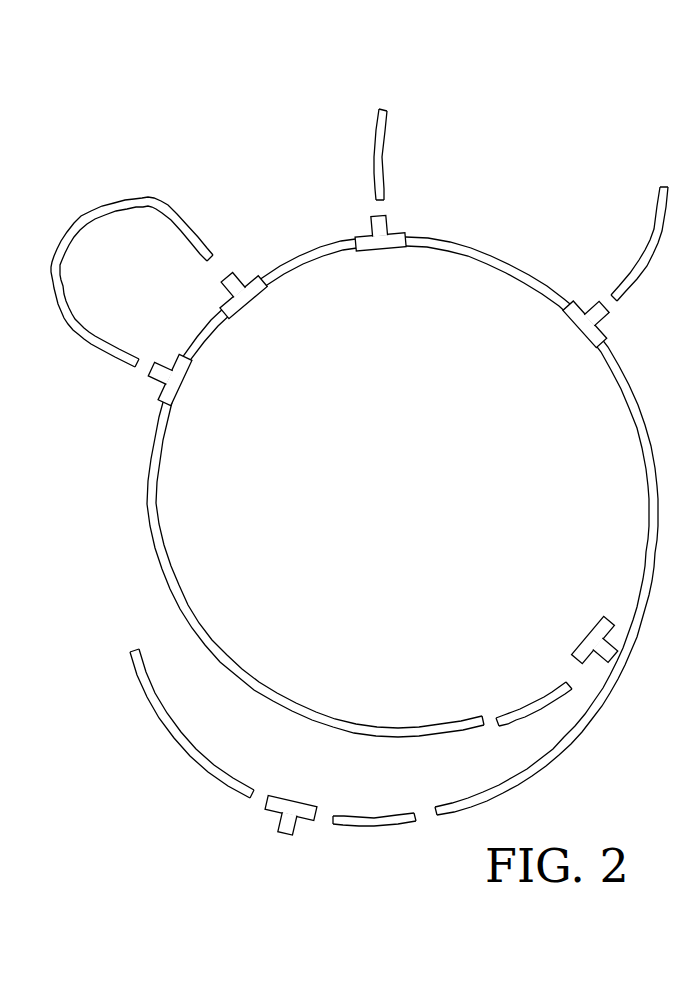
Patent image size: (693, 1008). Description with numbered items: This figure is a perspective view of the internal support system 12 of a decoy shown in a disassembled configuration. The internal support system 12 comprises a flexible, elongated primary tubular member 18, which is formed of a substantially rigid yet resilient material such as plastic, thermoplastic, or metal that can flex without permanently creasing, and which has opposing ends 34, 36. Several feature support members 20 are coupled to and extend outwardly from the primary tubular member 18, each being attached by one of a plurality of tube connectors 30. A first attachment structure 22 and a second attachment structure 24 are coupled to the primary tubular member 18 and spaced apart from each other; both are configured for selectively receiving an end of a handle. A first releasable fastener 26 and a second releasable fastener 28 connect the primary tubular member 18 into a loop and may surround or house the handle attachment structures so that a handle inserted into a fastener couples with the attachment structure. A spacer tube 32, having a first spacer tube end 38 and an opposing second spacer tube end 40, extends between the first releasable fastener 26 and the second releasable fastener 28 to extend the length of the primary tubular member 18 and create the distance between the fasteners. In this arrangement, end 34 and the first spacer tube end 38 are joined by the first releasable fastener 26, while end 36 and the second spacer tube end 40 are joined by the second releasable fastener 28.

The internal support system 12 is at (238, 149).
The primary tubular member 18 is at (158, 455).
The feature support members 20 is at (134, 200).
The first attachment structure 22 is at (534, 693).
The second attachment structure 24 is at (372, 823).
The first releasable fastener 26 is at (588, 632).
The second releasable fastener 28 is at (300, 808).
The tube connectors 30 is at (248, 302).
The spacer tube 32 is at (170, 733).
The end 34 is at (470, 715).
The end 36 is at (428, 822).
The first spacer tube end 38 is at (128, 645).
The second spacer tube end 40 is at (255, 795).